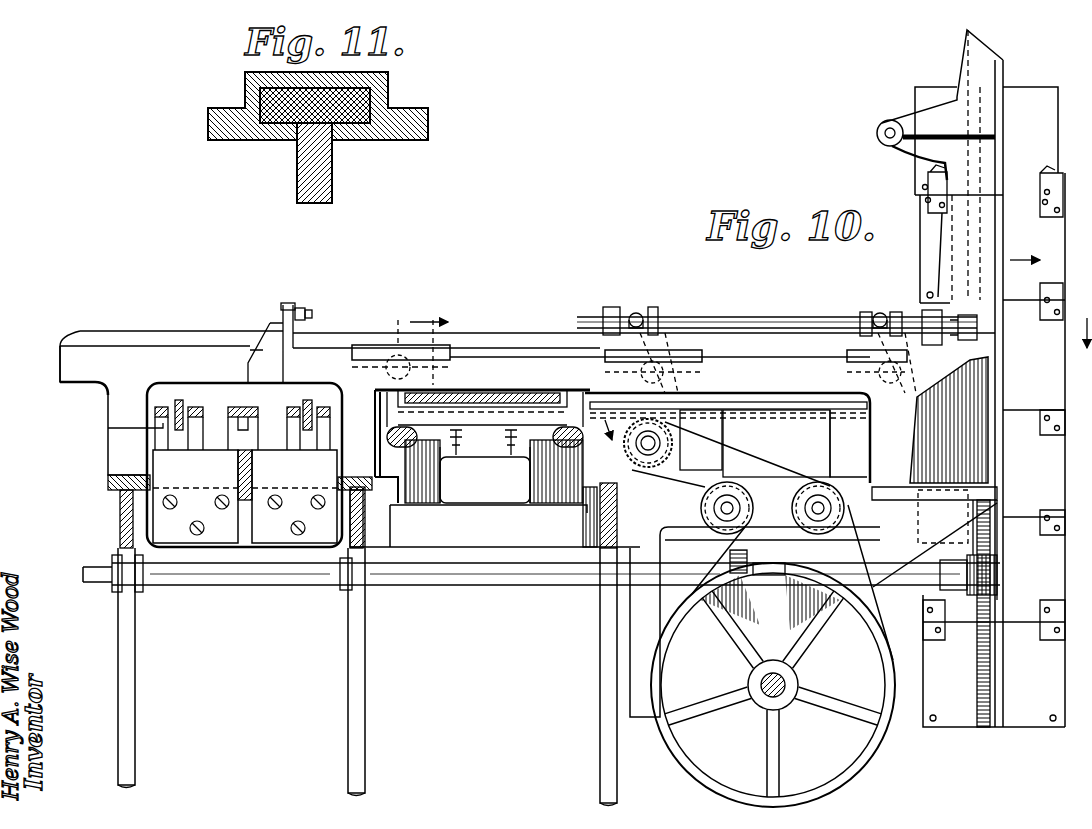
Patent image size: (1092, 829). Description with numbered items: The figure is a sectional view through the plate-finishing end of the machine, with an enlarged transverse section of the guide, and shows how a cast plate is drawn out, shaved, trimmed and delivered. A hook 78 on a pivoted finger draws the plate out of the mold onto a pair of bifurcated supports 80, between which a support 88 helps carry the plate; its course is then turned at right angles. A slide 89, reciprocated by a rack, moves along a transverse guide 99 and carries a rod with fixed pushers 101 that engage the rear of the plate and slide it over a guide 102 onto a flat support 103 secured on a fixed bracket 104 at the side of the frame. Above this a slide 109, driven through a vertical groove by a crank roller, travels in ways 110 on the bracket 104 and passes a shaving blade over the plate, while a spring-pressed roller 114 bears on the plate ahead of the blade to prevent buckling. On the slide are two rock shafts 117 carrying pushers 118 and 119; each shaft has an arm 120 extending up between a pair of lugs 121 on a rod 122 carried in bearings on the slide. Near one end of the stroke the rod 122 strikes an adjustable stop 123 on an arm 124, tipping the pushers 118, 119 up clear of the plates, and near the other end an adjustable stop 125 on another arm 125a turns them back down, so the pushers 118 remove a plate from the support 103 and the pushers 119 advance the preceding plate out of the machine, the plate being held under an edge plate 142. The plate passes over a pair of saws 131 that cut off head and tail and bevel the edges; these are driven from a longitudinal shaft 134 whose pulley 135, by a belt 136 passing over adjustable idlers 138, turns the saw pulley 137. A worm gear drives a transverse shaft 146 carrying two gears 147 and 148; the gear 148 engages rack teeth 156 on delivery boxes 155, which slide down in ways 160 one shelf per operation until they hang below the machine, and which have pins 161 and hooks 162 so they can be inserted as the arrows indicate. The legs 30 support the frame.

In FIG. 10, the supporting legs 30 is at (362, 725).
In FIG. 10, the hook 78 is at (313, 380).
In FIG. 10, the supports 80 is at (192, 407).
In FIG. 10, the support 88 is at (232, 405).
In FIG. 11, the slide 89 is at (245, 90).
In FIG. 10, the slide 89 is at (108, 333).
In FIG. 11, the transverse guide 99 is at (297, 125).
In FIG. 10, the transverse guide 99 is at (60, 364).
In FIG. 10, the pushers 101 is at (387, 400).
In FIG. 10, the guide 102 is at (328, 452).
In FIG. 10, the flat support 103 is at (490, 430).
In FIG. 10, the fixed bracket 104 is at (547, 505).
In FIG. 10, the slide 109 is at (397, 512).
In FIG. 10, the ways 110 is at (440, 500).
In FIG. 10, the roller 114 is at (470, 400).
In FIG. 10, the rock shafts 117 is at (640, 368).
In FIG. 10, the pushers 118 is at (700, 387).
In FIG. 10, the pushers 119 is at (910, 420).
In FIG. 10, the arm 120 is at (638, 312).
In FIG. 10, the lugs 121 is at (615, 306).
In FIG. 10, the rod 122 is at (755, 310).
In FIG. 10, the adjustable stop 123 is at (975, 332).
In FIG. 10, the arm 124 is at (975, 360).
In FIG. 10, the adjustable stop 125 is at (312, 313).
In FIG. 10, the arm 125a is at (287, 338).
In FIG. 10, the saws 131 is at (625, 448).
In FIG. 10, the longitudinal shaft 134 is at (798, 683).
In FIG. 10, the pulley 135 is at (690, 752).
In FIG. 10, the belt 136 is at (720, 548).
In FIG. 10, the saw pulley 137 is at (692, 532).
In FIG. 10, the adjustable idlers 138 is at (779, 541).
In FIG. 10, the edge plate 142 is at (730, 412).
In FIG. 10, the transverse shaft 146 is at (445, 590).
In FIG. 10, the gear 147 is at (750, 556).
In FIG. 10, the gear 148 is at (998, 586).
In FIG. 10, the delivery boxes 155 is at (920, 92).
In FIG. 10, the rack teeth 156 is at (980, 728).
In FIG. 10, the ways 160 is at (985, 73).
In FIG. 10, the pins 161 is at (922, 188).
In FIG. 10, the hooks 162 is at (935, 180).